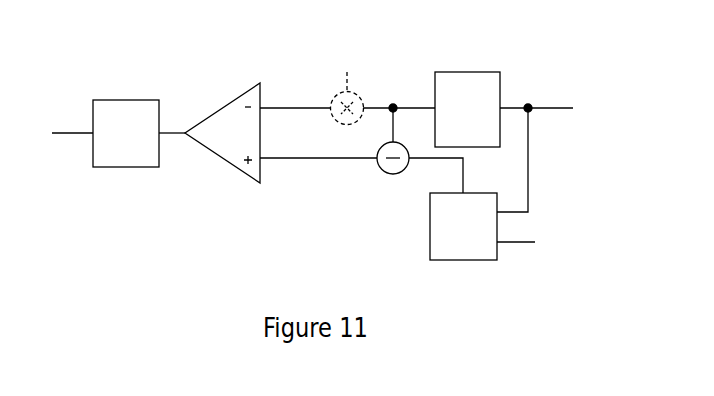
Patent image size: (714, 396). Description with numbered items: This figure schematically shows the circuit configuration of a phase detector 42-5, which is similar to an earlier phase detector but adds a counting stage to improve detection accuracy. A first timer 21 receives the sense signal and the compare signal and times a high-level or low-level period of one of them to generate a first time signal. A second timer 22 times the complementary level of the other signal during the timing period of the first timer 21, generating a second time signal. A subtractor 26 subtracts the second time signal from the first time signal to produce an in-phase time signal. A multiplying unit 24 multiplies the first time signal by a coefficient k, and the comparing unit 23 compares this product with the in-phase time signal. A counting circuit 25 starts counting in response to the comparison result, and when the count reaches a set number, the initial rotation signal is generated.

The phase detector 42-5 is at (126, 72).
The counting circuit 25 is at (126, 133).
The comparing unit 23 is at (222, 133).
The multiplying unit 24 is at (332, 98).
The subtractor 26 is at (391, 174).
The first timer 21 is at (467, 109).
The second timer 22 is at (463, 226).